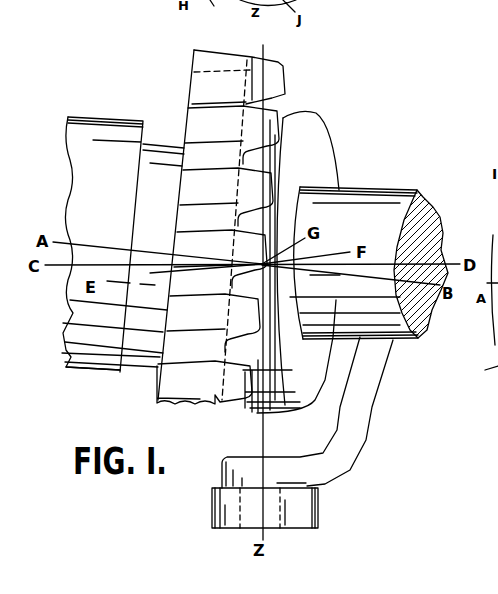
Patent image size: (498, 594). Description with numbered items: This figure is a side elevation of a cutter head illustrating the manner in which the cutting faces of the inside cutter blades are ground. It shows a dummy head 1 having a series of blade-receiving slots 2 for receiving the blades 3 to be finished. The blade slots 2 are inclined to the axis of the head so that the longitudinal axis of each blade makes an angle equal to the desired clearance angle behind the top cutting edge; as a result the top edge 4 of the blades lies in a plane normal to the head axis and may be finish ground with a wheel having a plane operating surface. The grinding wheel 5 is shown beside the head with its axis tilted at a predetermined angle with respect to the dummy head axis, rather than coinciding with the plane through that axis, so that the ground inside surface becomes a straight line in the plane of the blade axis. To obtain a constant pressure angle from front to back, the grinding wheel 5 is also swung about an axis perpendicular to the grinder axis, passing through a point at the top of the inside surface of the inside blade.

The dummy head 1 is at (192, 148).
The blade-receiving slots 2 is at (167, 367).
The blades 3 is at (200, 198).
The top edge 4 is at (273, 180).
The grinding wheel 5 is at (308, 125).